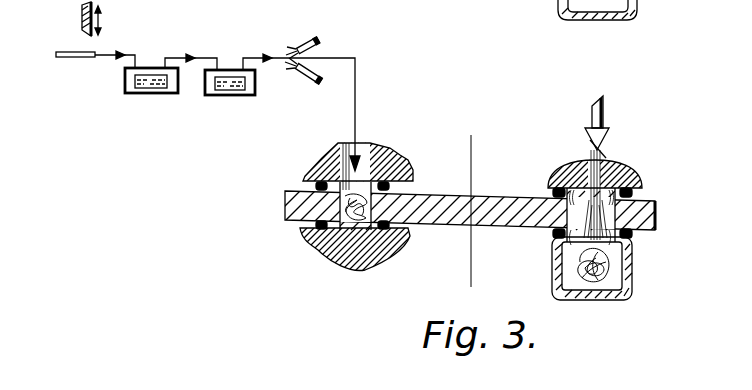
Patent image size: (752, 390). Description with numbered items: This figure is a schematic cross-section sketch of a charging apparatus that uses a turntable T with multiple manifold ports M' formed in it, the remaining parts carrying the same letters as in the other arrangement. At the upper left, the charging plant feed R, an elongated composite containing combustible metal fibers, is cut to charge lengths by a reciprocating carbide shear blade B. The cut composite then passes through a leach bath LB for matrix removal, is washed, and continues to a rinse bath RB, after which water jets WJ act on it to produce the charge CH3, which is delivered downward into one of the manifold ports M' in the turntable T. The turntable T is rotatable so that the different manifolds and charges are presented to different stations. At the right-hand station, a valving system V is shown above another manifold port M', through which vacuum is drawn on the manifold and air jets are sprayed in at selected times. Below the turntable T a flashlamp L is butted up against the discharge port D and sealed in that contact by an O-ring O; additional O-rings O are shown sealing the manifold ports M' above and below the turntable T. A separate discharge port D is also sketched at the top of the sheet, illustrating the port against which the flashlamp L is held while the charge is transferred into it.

The shear blade B is at (82, 15).
The charging plant feed R is at (72, 57).
The leach bath LB is at (140, 95).
The rinse bath RB is at (225, 97).
The water jets WJ is at (317, 75).
The charge CH3 is at (325, 150).
The O-ring O is at (314, 224).
The manifold ports M' is at (463, 208).
The valving system V is at (590, 158).
The turntable T is at (656, 203).
The flashlamp L is at (634, 276).
The discharge port D is at (580, 10).